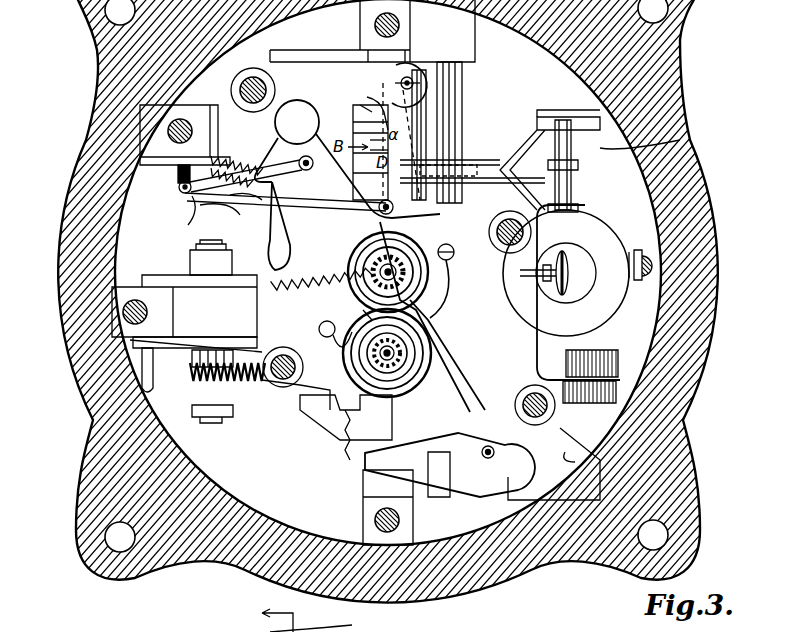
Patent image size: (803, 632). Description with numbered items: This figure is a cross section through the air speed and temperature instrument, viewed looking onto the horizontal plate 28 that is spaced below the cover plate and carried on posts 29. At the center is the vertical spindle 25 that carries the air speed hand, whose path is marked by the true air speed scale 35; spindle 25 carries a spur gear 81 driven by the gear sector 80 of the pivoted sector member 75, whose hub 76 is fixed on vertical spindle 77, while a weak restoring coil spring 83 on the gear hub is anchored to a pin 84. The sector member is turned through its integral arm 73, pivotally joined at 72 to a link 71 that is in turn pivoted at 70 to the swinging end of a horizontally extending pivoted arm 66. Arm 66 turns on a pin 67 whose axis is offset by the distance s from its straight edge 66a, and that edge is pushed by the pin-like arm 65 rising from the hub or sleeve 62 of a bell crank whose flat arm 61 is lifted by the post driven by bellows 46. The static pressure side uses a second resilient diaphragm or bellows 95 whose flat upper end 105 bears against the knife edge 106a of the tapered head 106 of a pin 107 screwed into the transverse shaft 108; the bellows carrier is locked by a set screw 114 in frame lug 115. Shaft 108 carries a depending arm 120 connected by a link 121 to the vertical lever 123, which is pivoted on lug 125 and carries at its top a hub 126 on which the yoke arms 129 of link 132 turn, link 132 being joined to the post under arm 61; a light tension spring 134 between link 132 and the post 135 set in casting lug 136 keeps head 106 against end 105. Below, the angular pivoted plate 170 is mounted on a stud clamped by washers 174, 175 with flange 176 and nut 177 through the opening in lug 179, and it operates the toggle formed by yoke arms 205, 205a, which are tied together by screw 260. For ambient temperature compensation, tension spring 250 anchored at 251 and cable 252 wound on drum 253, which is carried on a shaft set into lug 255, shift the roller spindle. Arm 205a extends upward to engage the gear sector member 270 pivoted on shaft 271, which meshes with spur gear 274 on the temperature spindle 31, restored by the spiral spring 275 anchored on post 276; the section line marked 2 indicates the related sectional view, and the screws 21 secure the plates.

The section line 2 is at (266, 618).
The screw 21 is at (170, 128).
The vertical spindle 25 is at (405, 250).
The horizontal plate 28 is at (305, 390).
The posts 29 is at (262, 76).
The spindle 31 is at (365, 318).
The true air speed scale 35 is at (323, 624).
The bellows 46 is at (440, 143).
The flat plate or arm 61 is at (366, 177).
The hub or sleeve 62 is at (372, 160).
The pin-like arm 65 is at (372, 136).
The pivoted arm 66 is at (375, 105).
The straight edge 66a is at (362, 108).
The pin 67 is at (386, 75).
The pivotal connection 70 is at (366, 228).
The link 71 is at (265, 206).
The pivotal connection 72 is at (178, 196).
The arm 73 is at (212, 196).
The sector member 75 is at (267, 233).
The hub 76 is at (228, 205).
The vertical spindle 77 is at (240, 212).
The gear sector 80 is at (298, 292).
The spur gear 81 is at (405, 272).
The restoring coil spring 83 is at (440, 292).
The pin 84 is at (455, 259).
The resilient diaphragm 95 is at (640, 243).
The flat upper end 105 is at (700, 202).
The head 106 is at (570, 298).
The peripheral edge 106a is at (543, 291).
The pin 107 is at (540, 280).
The shaft 108 is at (460, 113).
The set screw 114 is at (655, 262).
The frame lug 115 is at (652, 282).
The depending arm 120 is at (455, 150).
The link 121 is at (460, 202).
The lever 123 is at (577, 173).
The lug 125 is at (680, 140).
The hub 126 is at (575, 203).
The yoke arms 129 is at (515, 105).
The link 132 is at (522, 122).
The tension spring 134 is at (240, 160).
The post 135 is at (180, 175).
The casting lug 136 is at (160, 140).
The angular pivoted plate 170 is at (307, 398).
The washer 174 is at (145, 282).
The washer 175 is at (143, 382).
The flange 176 is at (190, 385).
The nut 177 is at (192, 264).
The lug 179 is at (165, 344).
The yoke arm 205 is at (346, 452).
The yoke arm 205a is at (420, 479).
The tension spring 250 is at (132, 418).
The anchor 251 is at (205, 392).
The cable 252 is at (620, 385).
The drum 253 is at (620, 355).
The lug 255 is at (575, 462).
The screw 260 is at (360, 462).
The gear sector member 270 is at (365, 475).
The shaft 271 is at (490, 444).
The spur gear 274 is at (425, 336).
The spiral restoring spring 275 is at (425, 347).
The post 276 is at (320, 331).